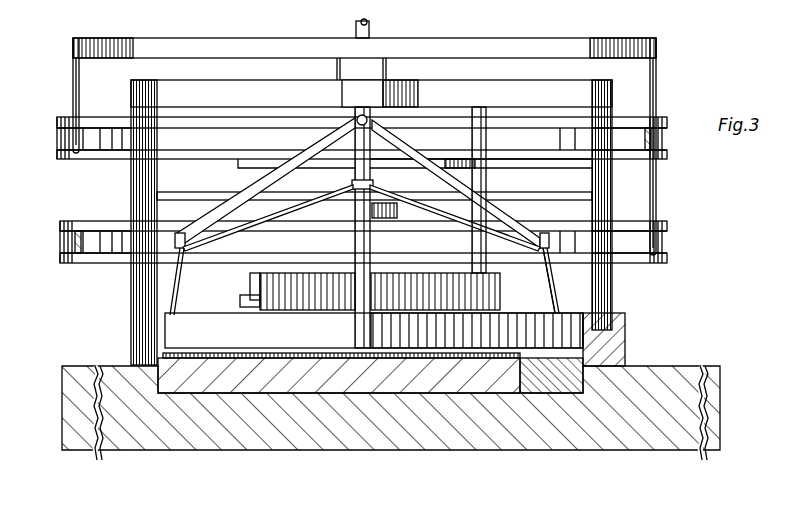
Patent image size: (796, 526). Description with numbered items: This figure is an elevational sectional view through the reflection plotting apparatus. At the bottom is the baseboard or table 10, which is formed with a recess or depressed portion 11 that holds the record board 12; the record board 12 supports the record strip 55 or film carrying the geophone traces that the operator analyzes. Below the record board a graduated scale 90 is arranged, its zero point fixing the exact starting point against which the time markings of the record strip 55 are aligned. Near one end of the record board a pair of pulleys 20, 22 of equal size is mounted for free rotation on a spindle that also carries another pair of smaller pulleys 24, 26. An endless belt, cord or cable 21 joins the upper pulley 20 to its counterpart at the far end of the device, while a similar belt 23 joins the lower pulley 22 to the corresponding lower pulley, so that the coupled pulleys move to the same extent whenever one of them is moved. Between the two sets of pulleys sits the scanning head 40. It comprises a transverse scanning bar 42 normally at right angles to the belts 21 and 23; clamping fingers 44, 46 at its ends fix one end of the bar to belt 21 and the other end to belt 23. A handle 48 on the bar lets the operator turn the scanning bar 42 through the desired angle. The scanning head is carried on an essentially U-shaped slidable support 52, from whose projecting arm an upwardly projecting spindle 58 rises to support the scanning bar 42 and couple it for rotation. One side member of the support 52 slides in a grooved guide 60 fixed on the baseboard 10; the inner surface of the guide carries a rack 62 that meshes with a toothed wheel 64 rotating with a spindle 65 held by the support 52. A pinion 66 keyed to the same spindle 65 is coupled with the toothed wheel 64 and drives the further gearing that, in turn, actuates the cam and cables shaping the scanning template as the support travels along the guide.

The baseboard 10 is at (673, 370).
The recess 11 is at (160, 371).
The record board 12 is at (160, 362).
The pulley 20 is at (95, 121).
The belt 21 is at (652, 137).
The pulley 22 is at (104, 263).
The belt 23 is at (75, 245).
The pulley 24 is at (238, 166).
The pulley 26 is at (240, 264).
The scanning head 40 is at (497, 31).
The transverse scanning bar 42 is at (432, 28).
The clamping finger 44 is at (73, 73).
The clamping finger 46 is at (652, 95).
The handle 48 is at (369, 24).
The U-shaped slidable support 52 is at (558, 88).
The record strip 55 is at (190, 348).
The spindle 58 is at (280, 288).
The grooved guide 60 is at (616, 356).
The rack 62 is at (578, 318).
The toothed wheel 64 is at (516, 322).
The spindle 65 is at (478, 184).
The pinion 66 is at (492, 291).
The graduated scale 90 is at (585, 385).